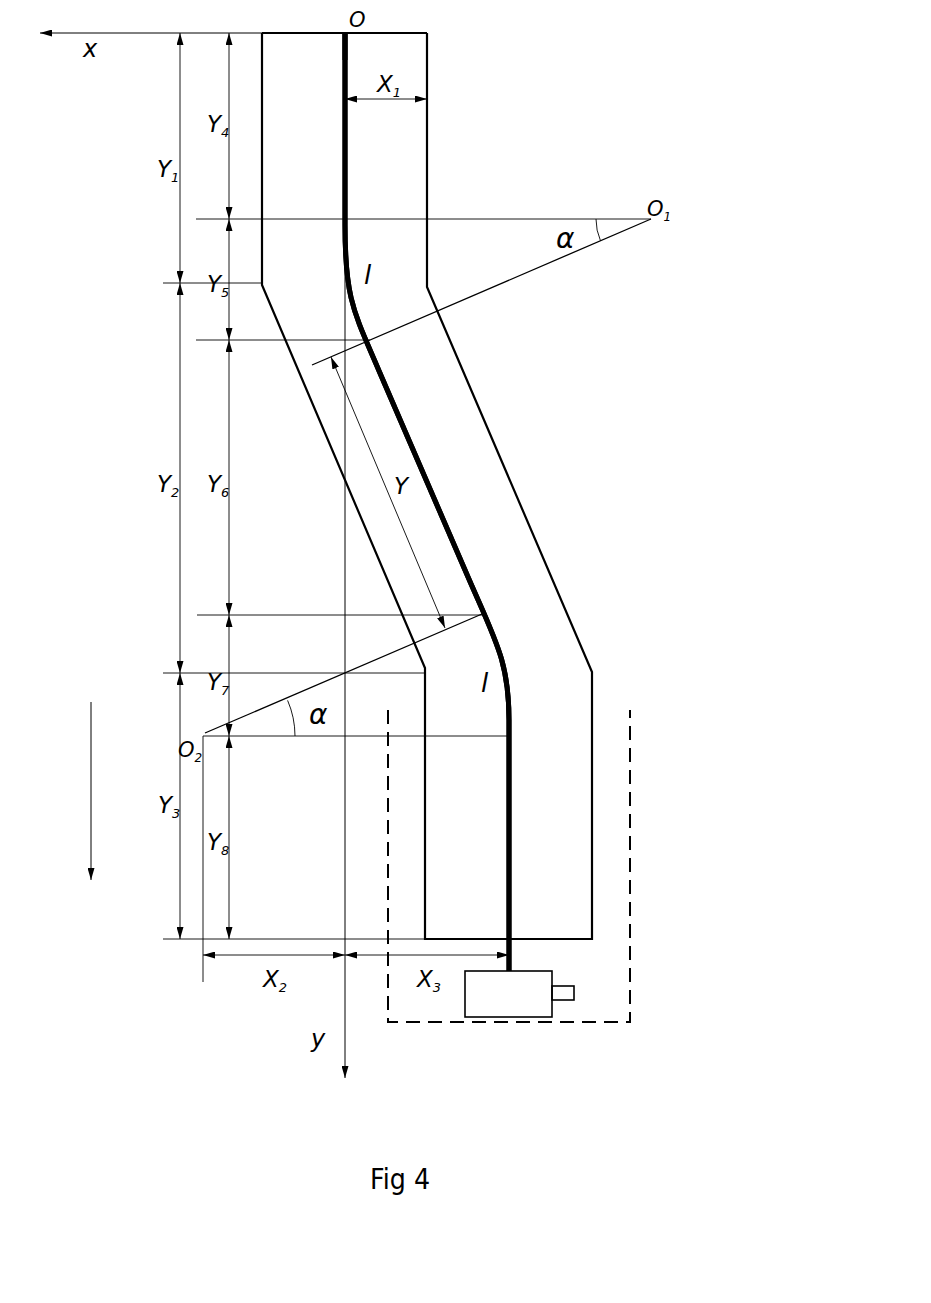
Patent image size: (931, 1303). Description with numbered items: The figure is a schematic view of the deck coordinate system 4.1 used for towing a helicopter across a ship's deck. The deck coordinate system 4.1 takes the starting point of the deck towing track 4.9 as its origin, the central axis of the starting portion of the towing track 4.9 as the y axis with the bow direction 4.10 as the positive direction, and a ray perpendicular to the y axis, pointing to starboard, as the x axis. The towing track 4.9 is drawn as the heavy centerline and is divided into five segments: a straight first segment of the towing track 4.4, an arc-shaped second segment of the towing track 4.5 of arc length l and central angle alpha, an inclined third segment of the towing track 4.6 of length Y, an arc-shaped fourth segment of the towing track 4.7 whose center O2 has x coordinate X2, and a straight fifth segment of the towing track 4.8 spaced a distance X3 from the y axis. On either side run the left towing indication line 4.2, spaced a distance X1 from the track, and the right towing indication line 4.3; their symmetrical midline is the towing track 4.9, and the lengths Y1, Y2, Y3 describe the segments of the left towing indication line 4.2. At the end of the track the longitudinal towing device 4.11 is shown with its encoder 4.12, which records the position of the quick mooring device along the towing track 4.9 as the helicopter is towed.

The deck coordinate system 4.1 is at (345, 35).
The left towing indication line 4.2 is at (472, 387).
The right towing indication line 4.3 is at (389, 568).
The first segment of a towing track 4.4 is at (348, 185).
The second segment of a towing track 4.5 is at (350, 268).
The third segment of a towing track 4.6 is at (428, 477).
The fourth segment of a towing track 4.7 is at (503, 658).
The fifth segment of a towing track 4.8 is at (511, 776).
The towing track 4.9 is at (348, 135).
The bow direction 4.10 is at (91, 813).
The longitudinal towing device 4.11 is at (526, 969).
The encoder 4.12 is at (577, 990).